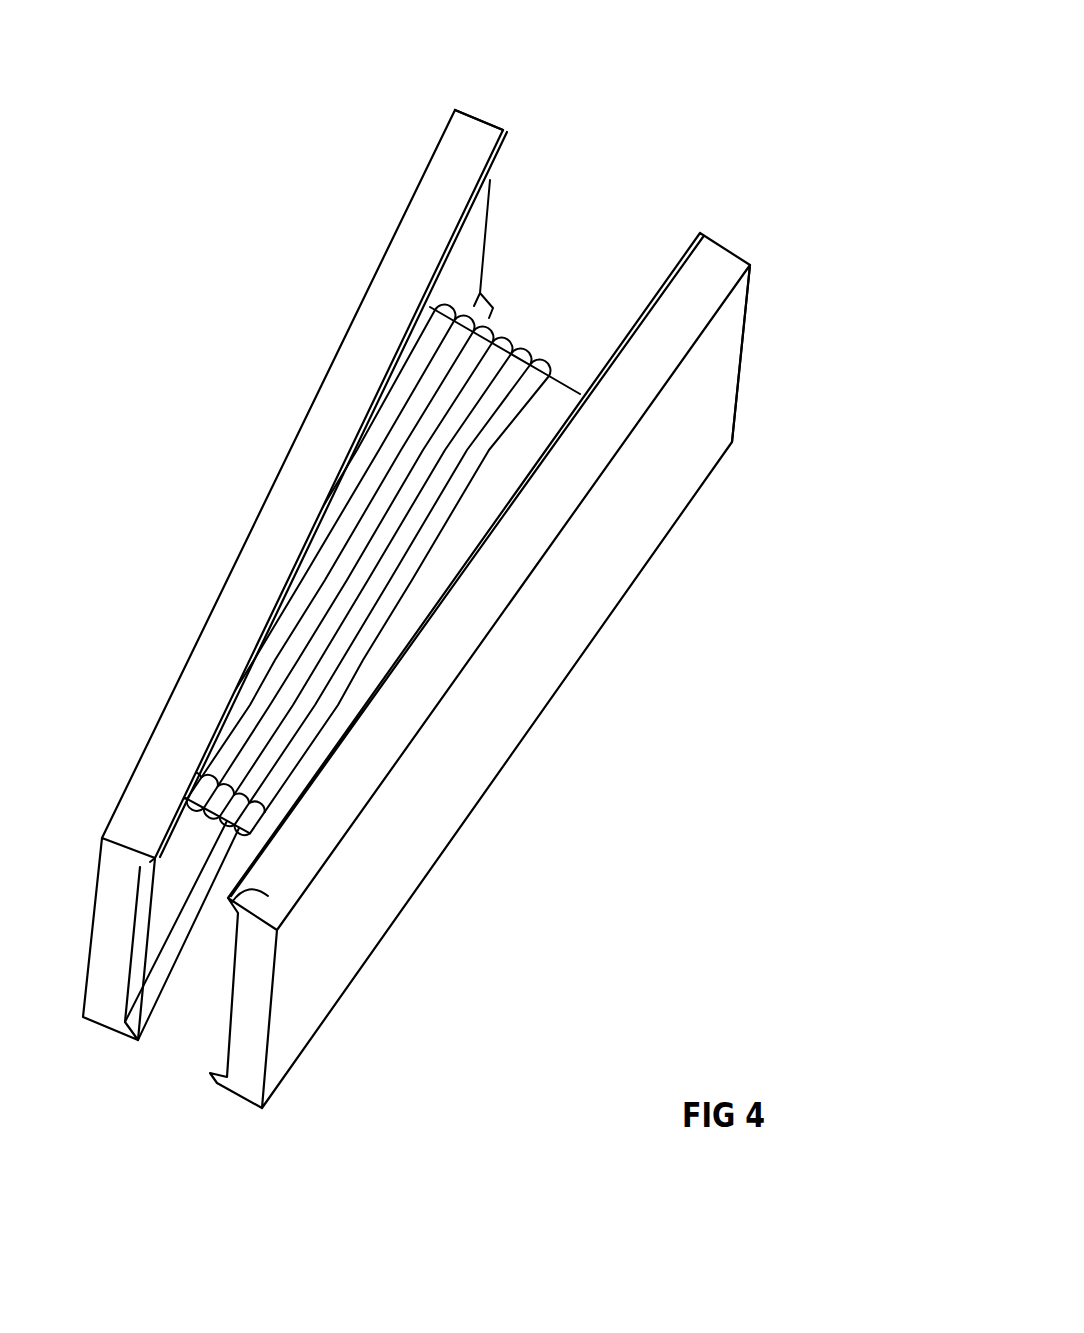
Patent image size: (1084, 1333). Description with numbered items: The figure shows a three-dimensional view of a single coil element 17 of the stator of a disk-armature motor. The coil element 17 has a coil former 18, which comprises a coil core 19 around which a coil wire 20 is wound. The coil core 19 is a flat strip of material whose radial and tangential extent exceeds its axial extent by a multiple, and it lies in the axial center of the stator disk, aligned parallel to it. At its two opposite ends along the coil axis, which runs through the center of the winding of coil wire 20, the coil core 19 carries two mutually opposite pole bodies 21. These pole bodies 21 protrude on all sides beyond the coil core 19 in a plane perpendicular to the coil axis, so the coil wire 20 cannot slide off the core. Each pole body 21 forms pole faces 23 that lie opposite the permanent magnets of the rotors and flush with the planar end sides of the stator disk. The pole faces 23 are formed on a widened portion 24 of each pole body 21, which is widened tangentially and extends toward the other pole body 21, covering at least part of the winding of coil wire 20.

The coil element 17 is at (426, 598).
The coil former 18 is at (426, 650).
The coil core 19 is at (547, 400).
The coil wire 20 is at (500, 333).
The pole bodies 21 is at (467, 257).
The pole faces 23 is at (298, 478).
The widened portion 24 is at (150, 862).